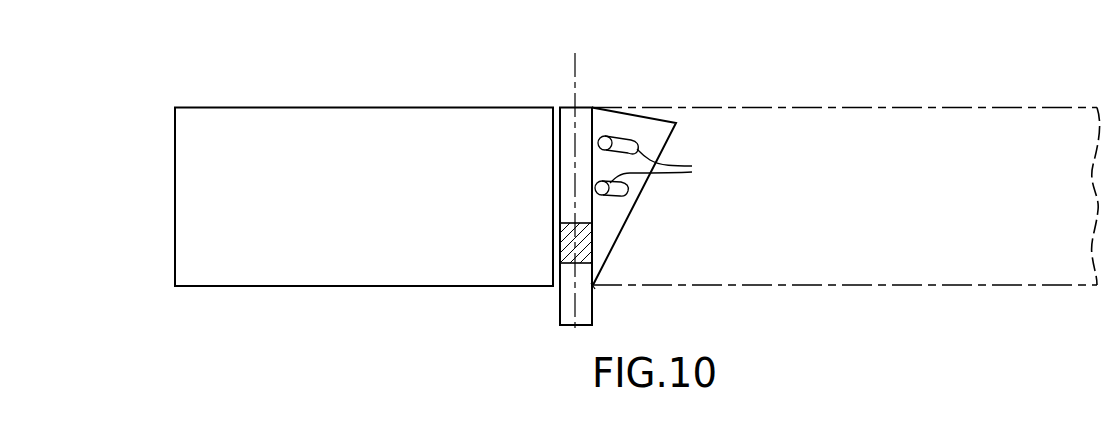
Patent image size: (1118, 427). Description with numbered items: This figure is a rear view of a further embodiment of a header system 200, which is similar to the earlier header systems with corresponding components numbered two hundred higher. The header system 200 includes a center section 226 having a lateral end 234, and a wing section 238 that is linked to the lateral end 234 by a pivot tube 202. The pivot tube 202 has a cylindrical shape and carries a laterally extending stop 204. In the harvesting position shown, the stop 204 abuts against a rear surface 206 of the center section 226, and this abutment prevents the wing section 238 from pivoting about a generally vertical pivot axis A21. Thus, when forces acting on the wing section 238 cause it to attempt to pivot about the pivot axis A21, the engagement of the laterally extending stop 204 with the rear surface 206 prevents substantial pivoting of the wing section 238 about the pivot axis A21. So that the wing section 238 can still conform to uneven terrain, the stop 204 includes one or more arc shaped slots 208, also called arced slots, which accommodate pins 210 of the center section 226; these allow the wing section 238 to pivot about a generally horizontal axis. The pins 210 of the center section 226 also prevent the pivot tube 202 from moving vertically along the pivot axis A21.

The header system 200 is at (931, 84).
The pivot tube 202 is at (563, 132).
The laterally extending stop 204 is at (607, 228).
The rear surface 206 is at (847, 186).
The arc shaped slots 208 is at (620, 137).
The pins 210 is at (669, 166).
The center section 226 is at (815, 107).
The lateral end 234 is at (594, 288).
The wing section 238 is at (360, 132).
The pivot axis A21 is at (575, 310).